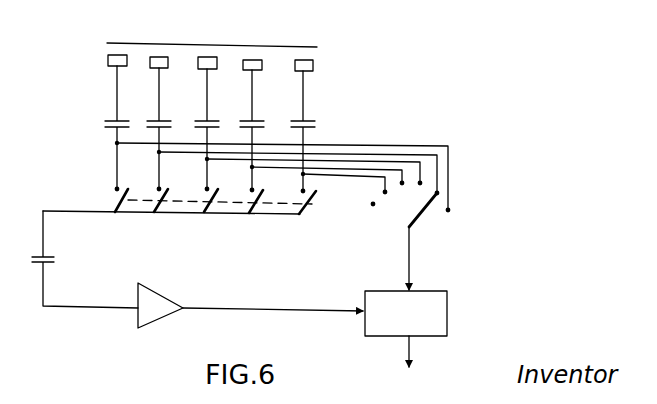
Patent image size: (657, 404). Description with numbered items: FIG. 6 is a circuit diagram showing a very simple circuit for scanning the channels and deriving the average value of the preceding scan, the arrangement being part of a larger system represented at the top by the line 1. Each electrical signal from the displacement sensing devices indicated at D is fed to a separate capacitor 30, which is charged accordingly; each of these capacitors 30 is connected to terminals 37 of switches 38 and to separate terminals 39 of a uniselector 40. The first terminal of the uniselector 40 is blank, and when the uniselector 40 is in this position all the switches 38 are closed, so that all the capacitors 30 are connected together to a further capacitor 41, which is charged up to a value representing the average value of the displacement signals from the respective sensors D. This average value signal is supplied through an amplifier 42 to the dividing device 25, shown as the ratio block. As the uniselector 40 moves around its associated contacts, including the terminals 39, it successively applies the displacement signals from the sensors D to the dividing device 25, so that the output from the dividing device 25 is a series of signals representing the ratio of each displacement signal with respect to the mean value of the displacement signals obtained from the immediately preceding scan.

The conveying line / measured material 1 is at (232, 43).
The displacing sensing devices D is at (107, 64).
The storage capacitors 30 is at (104, 121).
The terminals 37 is at (113, 185).
The switches 38 is at (117, 199).
The terminals of a uniselector 39 is at (389, 197).
The uniselector 40 is at (437, 220).
The further capacitor 41 is at (55, 258).
The amplifier 42 is at (162, 302).
The dividing device 25 is at (447, 314).